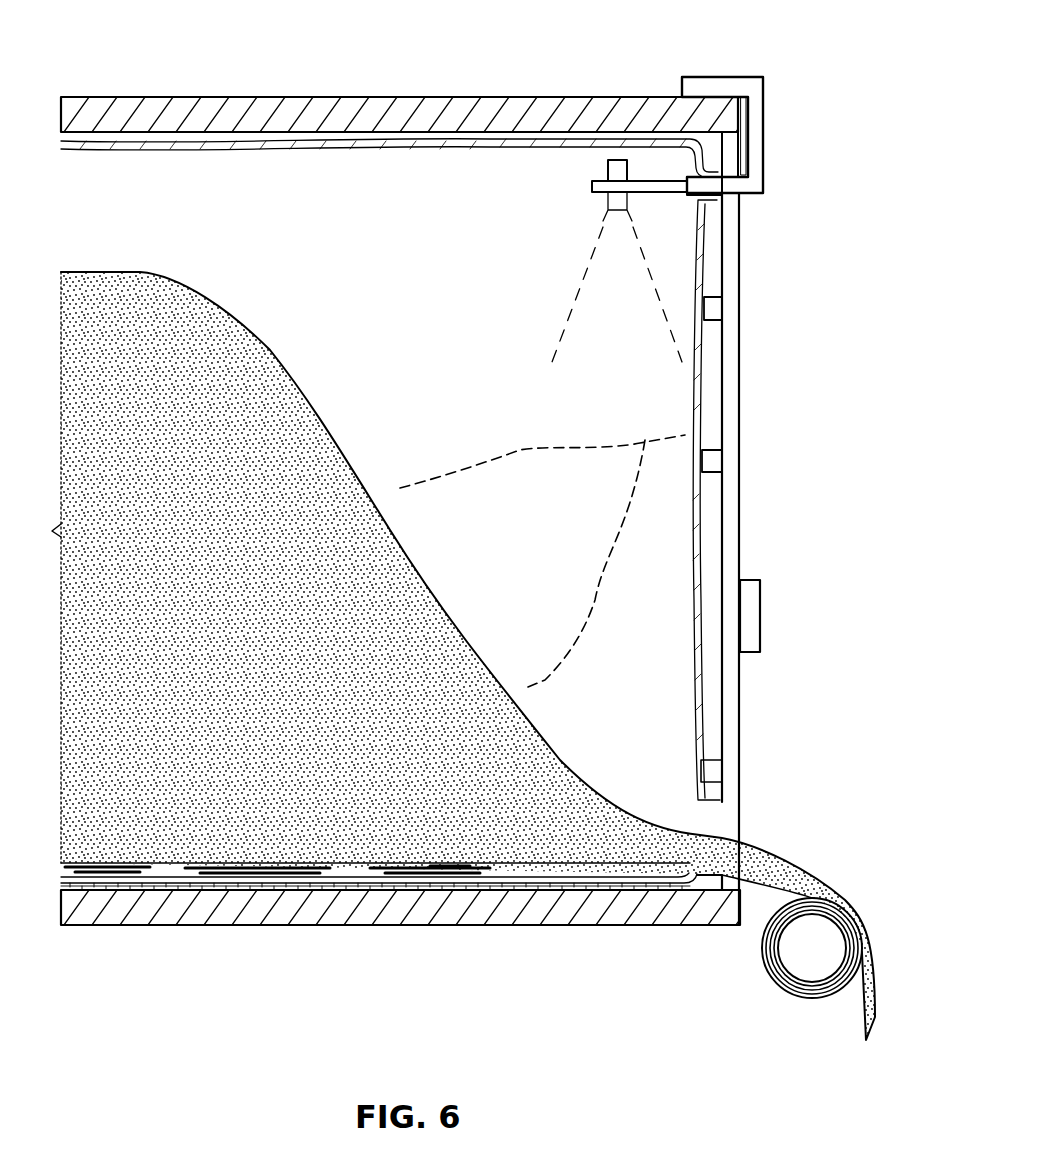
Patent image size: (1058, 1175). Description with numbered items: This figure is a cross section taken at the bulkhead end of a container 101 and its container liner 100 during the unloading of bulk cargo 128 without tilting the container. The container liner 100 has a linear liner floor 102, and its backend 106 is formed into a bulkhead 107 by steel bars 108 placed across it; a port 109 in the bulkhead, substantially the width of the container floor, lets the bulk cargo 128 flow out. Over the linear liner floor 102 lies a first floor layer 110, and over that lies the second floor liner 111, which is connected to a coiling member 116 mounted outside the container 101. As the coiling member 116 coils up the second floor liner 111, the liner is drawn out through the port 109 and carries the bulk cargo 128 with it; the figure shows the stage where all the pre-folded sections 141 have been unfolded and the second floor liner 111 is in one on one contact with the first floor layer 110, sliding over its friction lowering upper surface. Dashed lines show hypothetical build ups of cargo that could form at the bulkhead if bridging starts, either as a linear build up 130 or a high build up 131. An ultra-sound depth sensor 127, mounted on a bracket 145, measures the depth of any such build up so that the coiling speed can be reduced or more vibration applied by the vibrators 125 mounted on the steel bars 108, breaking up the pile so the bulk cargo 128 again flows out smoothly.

The container liner 100 is at (707, 380).
The container 101 is at (568, 97).
The linear liner floor 102 is at (185, 892).
The backend 106 is at (707, 417).
The bulkhead 107 is at (707, 240).
The steel bars 108 is at (713, 309).
The port 109 is at (720, 811).
The first floor layer 110 is at (348, 890).
The second floor liner 111 is at (492, 882).
The coiling member 116 is at (798, 962).
The vibrators 125 is at (762, 620).
The ultra-sound depth sensor 127 is at (607, 172).
The bulk cargo 128 is at (818, 868).
The linear build up 130 is at (540, 447).
The high build up 131 is at (598, 565).
The pre-folded sections 141 is at (215, 878).
The bracket 145 is at (755, 137).